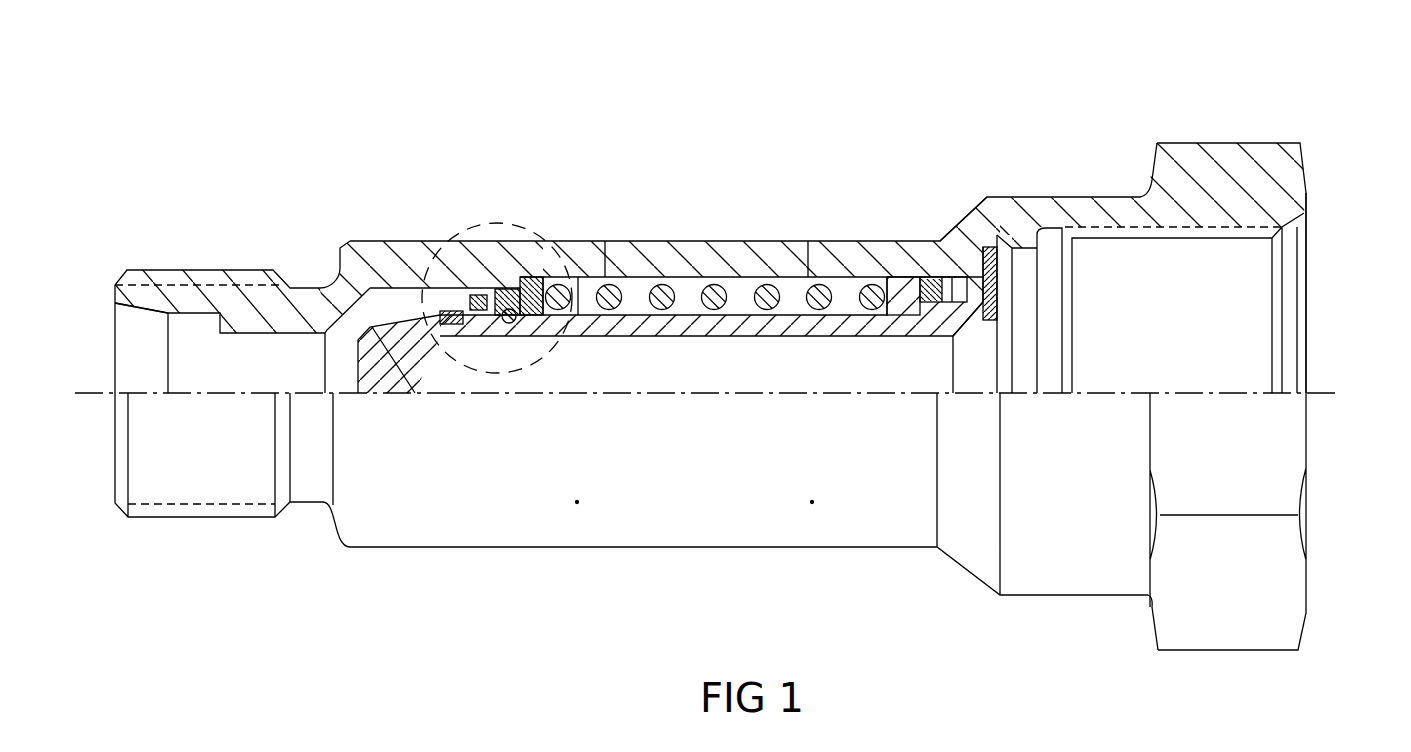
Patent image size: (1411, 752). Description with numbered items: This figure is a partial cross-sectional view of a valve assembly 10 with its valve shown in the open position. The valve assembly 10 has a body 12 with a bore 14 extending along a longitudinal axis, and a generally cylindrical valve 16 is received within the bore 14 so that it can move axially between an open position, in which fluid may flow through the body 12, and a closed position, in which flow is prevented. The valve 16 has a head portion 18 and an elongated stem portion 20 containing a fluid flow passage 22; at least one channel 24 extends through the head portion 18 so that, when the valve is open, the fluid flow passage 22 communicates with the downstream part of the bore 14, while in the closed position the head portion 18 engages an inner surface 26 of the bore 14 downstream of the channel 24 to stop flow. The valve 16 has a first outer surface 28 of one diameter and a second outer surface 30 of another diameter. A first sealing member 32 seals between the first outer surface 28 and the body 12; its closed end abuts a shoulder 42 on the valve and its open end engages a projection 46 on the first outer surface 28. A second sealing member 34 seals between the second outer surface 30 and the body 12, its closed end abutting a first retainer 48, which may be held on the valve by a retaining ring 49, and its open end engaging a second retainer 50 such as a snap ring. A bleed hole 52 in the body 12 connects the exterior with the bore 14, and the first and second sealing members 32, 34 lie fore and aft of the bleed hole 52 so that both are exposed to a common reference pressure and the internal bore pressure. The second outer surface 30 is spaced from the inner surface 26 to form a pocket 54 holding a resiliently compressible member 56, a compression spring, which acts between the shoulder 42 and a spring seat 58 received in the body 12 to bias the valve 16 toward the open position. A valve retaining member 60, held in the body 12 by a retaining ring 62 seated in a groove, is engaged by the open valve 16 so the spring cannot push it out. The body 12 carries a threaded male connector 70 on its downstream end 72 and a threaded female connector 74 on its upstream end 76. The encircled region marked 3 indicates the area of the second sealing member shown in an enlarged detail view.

The valve assembly 10 is at (1100, 103).
The body 12 is at (665, 228).
The bore 14 is at (1185, 396).
The valve 16 is at (838, 300).
The head portion 18 is at (362, 330).
The elongated stem portion 20 is at (702, 328).
The fluid flow passage 22 is at (653, 360).
The channel 24 is at (402, 343).
The inner surface 26 is at (345, 327).
The first outer surface 28 is at (955, 278).
The second outer surface 30 is at (580, 277).
The first sealing member 32 is at (930, 280).
The second sealing member 34 is at (486, 306).
The shoulder 42 is at (903, 288).
The projection 46 is at (977, 308).
The first retainer 48 is at (478, 295).
The retaining ring 49 is at (505, 309).
The second retainer 50 is at (451, 311).
The bleed hole 52 is at (607, 243).
The pocket 54 is at (741, 285).
The resiliently compressible member 56 is at (712, 268).
The spring seat 58 is at (517, 289).
The valve retaining member 60 is at (990, 247).
The retaining ring 62 is at (1007, 248).
The threaded male connector 70 is at (208, 270).
The downstream end 72 is at (115, 303).
The threaded female connector 74 is at (1228, 228).
The upstream end 76 is at (1307, 192).
The detail circle FIG. 3 is at (577, 382).